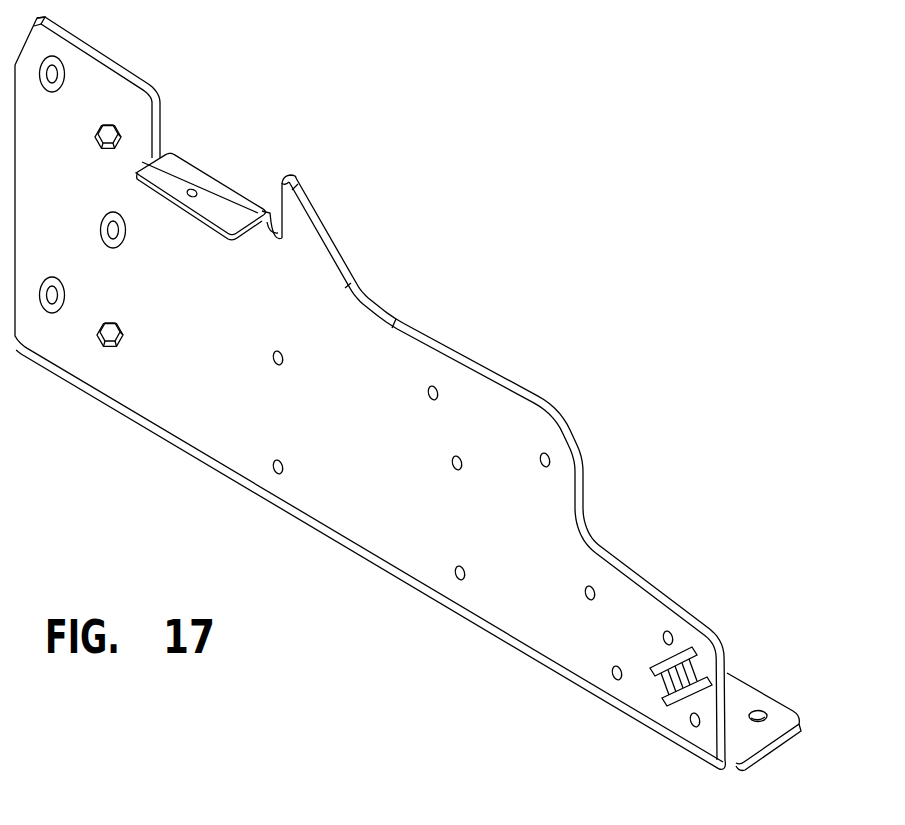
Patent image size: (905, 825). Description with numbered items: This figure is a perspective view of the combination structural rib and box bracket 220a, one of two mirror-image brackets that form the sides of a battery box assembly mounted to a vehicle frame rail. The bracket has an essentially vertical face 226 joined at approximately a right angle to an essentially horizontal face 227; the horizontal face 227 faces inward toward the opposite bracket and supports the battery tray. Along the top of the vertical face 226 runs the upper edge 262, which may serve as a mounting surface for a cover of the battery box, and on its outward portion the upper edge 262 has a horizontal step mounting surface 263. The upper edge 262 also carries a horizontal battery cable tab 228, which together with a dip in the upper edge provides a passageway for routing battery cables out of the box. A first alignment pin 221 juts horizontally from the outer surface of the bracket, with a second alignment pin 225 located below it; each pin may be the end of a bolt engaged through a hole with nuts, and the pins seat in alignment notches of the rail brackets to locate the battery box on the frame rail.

The combination structural rib and box bracket 220a is at (405, 439).
The first alignment pin 221 is at (122, 132).
The second alignment pin 225 is at (111, 352).
The vertical face 226 is at (516, 442).
The horizontal face 227 is at (738, 691).
The horizontal battery cable tab 228 is at (235, 204).
The upper edge 262 is at (457, 355).
The horizontal step mounting surface 263 is at (663, 588).